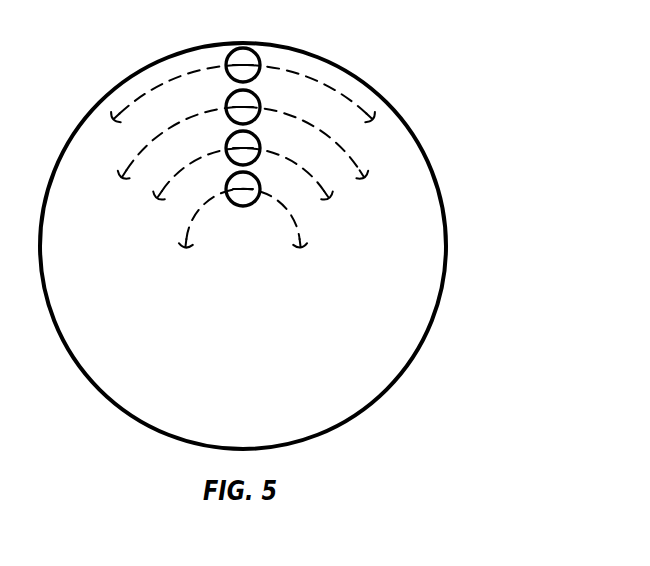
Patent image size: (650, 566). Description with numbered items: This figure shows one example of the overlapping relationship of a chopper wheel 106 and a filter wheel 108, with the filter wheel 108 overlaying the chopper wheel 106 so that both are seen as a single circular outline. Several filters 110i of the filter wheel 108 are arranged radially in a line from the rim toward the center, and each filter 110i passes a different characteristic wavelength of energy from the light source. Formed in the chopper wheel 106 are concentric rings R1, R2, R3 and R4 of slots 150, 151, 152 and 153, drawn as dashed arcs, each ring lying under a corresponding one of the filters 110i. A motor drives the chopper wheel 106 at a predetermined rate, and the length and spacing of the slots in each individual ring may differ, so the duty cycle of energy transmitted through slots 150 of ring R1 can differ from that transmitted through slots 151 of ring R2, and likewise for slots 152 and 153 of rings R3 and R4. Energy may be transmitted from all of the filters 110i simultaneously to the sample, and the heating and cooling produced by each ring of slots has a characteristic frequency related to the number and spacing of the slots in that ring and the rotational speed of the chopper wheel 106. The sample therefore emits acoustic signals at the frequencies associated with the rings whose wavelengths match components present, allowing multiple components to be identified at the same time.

The chopper wheel 106 is at (447, 237).
The filter wheel 108 is at (243, 246).
The filters 110i is at (242, 47).
The slots 150 is at (158, 86).
The slots 151 is at (142, 151).
The slots 152 is at (192, 161).
The slots 153 is at (192, 225).
The ring R1 is at (338, 88).
The ring R2 is at (332, 131).
The ring R3 is at (318, 175).
The ring R4 is at (296, 228).